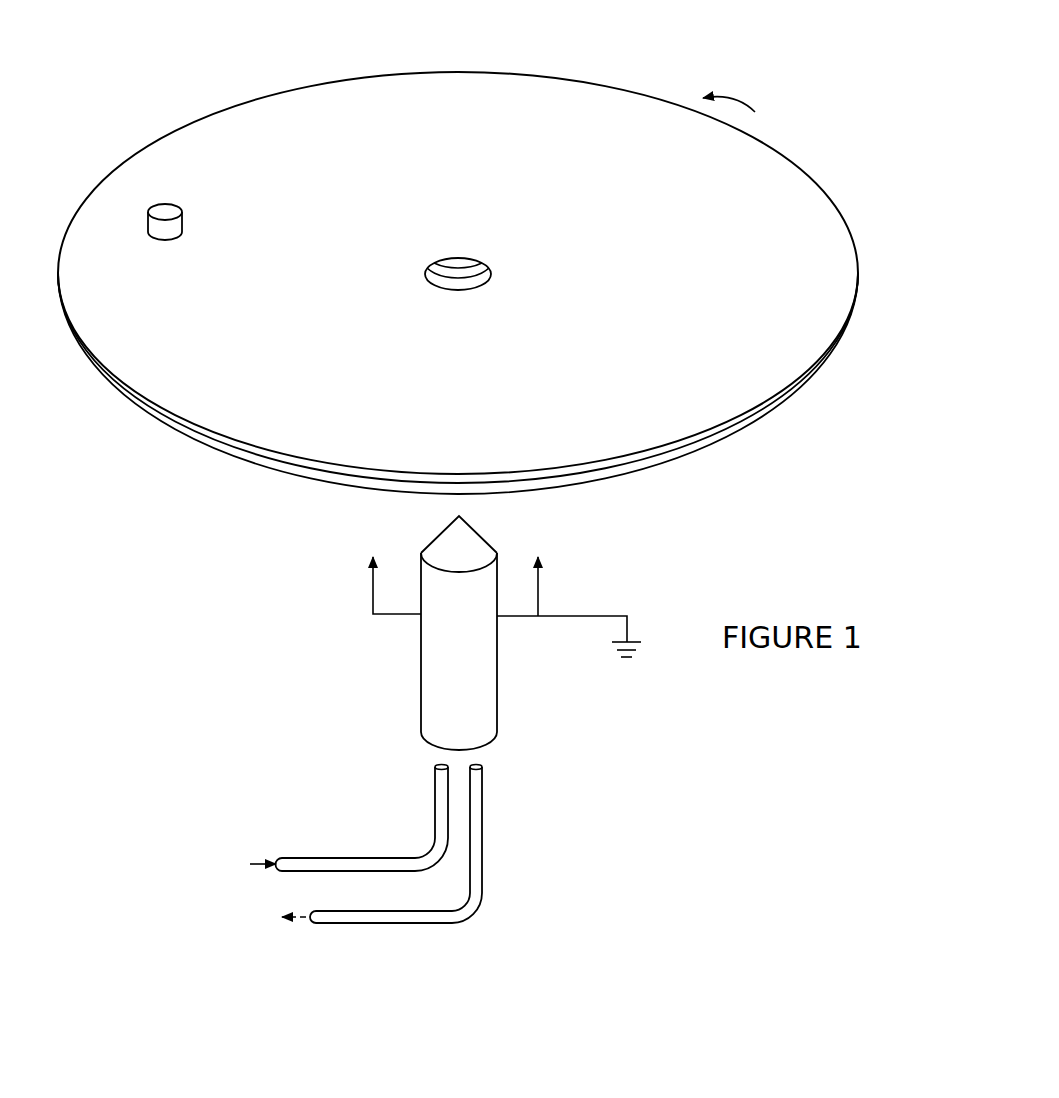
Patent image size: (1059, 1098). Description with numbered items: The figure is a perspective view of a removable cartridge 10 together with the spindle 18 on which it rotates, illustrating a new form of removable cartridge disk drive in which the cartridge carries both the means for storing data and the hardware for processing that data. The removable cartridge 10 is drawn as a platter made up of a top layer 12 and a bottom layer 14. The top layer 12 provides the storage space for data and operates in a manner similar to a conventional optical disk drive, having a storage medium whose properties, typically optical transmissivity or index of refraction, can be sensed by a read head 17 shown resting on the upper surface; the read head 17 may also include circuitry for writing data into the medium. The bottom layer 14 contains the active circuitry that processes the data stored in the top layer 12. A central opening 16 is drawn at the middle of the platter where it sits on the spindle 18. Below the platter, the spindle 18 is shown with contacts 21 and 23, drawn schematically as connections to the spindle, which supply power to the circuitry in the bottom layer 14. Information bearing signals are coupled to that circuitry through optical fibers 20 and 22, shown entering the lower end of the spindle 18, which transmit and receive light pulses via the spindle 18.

The removable cartridge 10 is at (680, 75).
The top layer 12 is at (748, 422).
The bottom layer 14 is at (752, 430).
The central hole 16 is at (476, 252).
The read head 17 is at (176, 210).
The spindle 18 is at (484, 711).
The optical fiber 20 is at (483, 816).
The contact 21 is at (554, 556).
The optical fiber 22 is at (436, 808).
The contact 23 is at (360, 556).